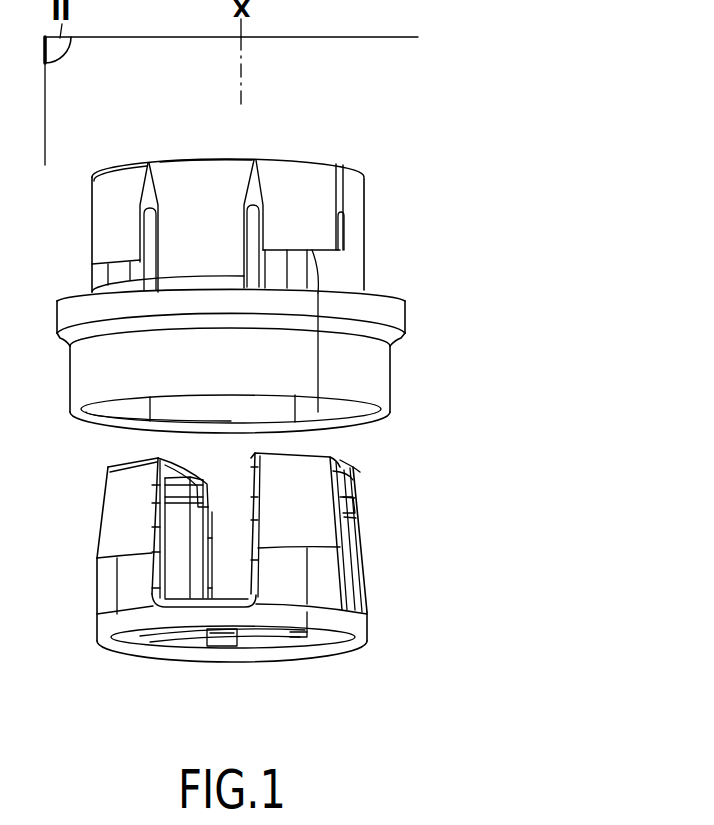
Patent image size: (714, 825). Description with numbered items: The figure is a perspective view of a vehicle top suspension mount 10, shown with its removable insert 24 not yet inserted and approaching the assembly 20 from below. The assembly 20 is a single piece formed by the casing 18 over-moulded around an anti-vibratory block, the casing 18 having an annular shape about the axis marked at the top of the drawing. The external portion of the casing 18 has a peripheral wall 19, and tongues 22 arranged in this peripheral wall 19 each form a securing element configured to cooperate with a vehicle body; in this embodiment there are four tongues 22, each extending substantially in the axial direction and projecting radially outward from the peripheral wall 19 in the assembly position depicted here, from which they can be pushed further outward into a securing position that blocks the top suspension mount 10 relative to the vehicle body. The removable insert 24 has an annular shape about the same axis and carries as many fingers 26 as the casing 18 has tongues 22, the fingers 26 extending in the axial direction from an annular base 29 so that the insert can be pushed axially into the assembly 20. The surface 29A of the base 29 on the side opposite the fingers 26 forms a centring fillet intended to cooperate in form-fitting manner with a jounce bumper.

The top suspension mount 10 is at (533, 495).
The casing 18 is at (195, 170).
The peripheral wall 19 is at (218, 190).
The assembly 20 is at (113, 187).
The tongues 22 is at (107, 249).
The removable insert 24 is at (390, 539).
The fingers 26 is at (155, 456).
The annular base 29 is at (192, 616).
The surface of base 29A is at (273, 653).